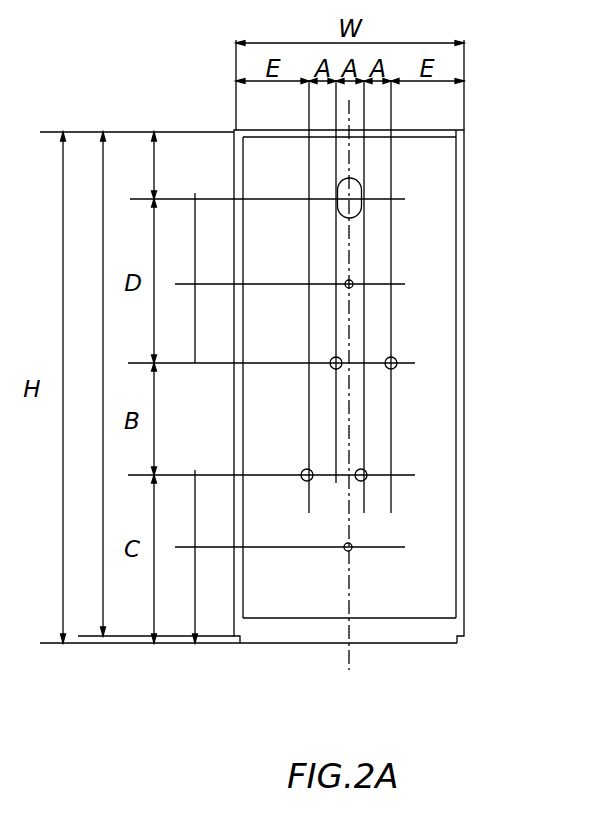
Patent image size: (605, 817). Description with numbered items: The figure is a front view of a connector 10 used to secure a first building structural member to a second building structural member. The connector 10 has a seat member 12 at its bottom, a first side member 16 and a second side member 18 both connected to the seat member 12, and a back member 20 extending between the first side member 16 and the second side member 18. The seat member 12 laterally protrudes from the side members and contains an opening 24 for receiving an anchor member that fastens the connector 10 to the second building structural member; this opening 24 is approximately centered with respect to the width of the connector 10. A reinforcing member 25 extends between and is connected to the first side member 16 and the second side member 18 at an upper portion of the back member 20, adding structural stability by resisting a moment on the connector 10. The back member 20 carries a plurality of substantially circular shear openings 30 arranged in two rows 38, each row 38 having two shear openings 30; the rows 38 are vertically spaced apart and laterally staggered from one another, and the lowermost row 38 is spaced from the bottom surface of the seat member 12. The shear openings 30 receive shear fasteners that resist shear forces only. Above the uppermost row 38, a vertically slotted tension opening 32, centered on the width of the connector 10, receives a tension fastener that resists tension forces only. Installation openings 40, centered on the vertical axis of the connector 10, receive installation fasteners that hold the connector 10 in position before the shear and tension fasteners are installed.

The connector 10 is at (487, 52).
The seat member 12 is at (437, 643).
The first side member 16 is at (234, 607).
The second side member 18 is at (464, 583).
The back member 20 is at (423, 230).
The opening 24 is at (377, 630).
The reinforcing member 25 is at (438, 129).
The shear openings 30 is at (340, 358).
The tension opening 32 is at (353, 178).
The rows 38 is at (415, 363).
The installation openings 40 is at (353, 280).